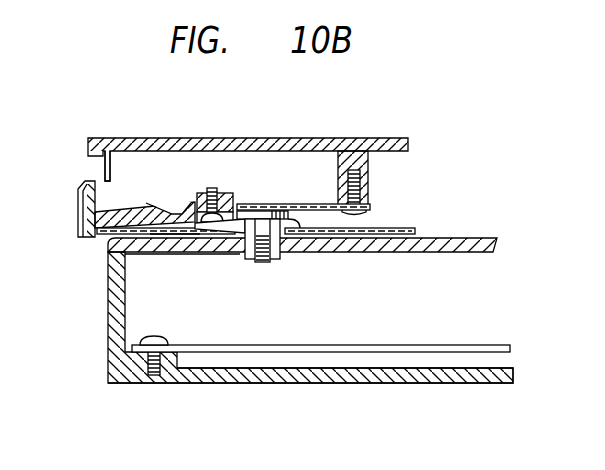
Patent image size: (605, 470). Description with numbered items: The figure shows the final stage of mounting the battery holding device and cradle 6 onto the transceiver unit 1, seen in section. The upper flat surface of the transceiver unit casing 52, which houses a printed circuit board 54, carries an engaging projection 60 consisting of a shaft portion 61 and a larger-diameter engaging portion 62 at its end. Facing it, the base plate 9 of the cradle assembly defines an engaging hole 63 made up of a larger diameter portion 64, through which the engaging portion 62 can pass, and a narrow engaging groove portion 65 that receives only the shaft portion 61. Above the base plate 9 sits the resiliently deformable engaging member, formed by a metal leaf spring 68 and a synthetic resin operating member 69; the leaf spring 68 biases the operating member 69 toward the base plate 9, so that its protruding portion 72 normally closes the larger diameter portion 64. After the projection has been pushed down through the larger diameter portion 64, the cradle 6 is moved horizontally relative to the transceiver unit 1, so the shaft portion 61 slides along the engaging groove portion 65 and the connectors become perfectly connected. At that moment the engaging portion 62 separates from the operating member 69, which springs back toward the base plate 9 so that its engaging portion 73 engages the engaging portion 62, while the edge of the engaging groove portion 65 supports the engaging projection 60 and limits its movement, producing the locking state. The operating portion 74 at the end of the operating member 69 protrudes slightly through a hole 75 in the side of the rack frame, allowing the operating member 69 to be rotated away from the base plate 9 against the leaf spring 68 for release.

The transceiver unit 1 is at (333, 383).
The cradle 6 is at (183, 139).
The base plate 9 is at (403, 246).
The transceiver unit casing 52 is at (222, 385).
The printed circuit board 54 is at (481, 353).
The engaging projection 60 is at (275, 244).
The shaft portion 61 is at (250, 238).
The engaging portion 62 is at (297, 230).
The engaging hole 63 is at (186, 256).
The larger diameter portion 64 is at (152, 240).
The engaging groove portion 65 is at (243, 228).
The leaf spring 68 is at (292, 204).
The operating member 69 is at (127, 203).
The protruding portion 72 is at (170, 234).
The engaging portion 73 is at (240, 224).
The operating portion 74 is at (77, 188).
The hole 75 is at (103, 168).